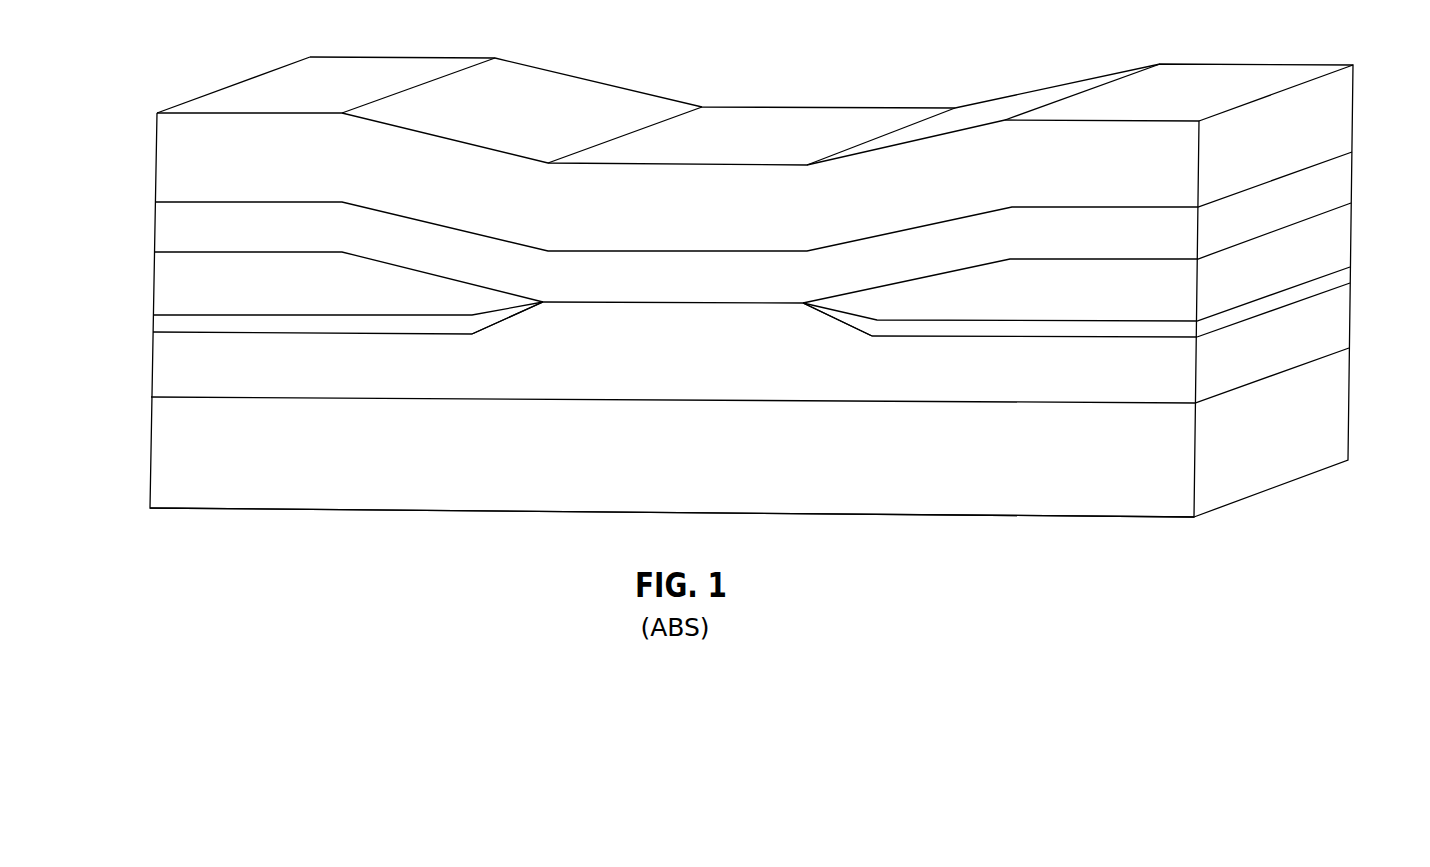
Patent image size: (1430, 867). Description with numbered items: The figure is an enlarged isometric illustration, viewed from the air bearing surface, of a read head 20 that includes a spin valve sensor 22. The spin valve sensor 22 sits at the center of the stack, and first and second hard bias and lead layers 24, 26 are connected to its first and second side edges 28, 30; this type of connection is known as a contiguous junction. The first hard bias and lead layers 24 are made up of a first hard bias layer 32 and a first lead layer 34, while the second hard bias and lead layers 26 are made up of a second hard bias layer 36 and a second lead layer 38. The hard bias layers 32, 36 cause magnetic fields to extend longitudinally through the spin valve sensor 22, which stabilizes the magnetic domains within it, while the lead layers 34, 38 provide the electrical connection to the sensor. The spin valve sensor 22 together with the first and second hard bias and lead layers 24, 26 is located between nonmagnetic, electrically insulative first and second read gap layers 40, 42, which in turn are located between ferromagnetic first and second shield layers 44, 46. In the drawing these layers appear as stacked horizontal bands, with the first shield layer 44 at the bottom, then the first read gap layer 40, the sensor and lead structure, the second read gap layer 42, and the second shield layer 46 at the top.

The read head 20 is at (833, 76).
The spin valve sensor 22 is at (582, 300).
The first hard bias and lead layers 24 is at (148, 253).
The second hard bias and lead layers 26 is at (1360, 202).
The first side edge 28 is at (500, 322).
The second side edge 30 is at (850, 318).
The first hard bias layer 32 is at (182, 325).
The first lead layer 34 is at (197, 267).
The second hard bias layer 36 is at (1157, 331).
The second lead layer 38 is at (1142, 272).
The first read gap layer 40 is at (487, 388).
The second read gap layer 42 is at (405, 235).
The first shield layer 44 is at (326, 487).
The second shield layer 46 is at (605, 93).